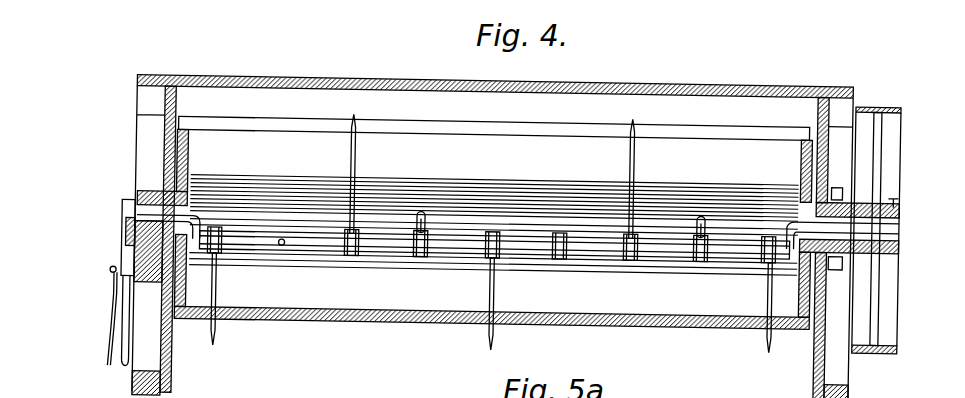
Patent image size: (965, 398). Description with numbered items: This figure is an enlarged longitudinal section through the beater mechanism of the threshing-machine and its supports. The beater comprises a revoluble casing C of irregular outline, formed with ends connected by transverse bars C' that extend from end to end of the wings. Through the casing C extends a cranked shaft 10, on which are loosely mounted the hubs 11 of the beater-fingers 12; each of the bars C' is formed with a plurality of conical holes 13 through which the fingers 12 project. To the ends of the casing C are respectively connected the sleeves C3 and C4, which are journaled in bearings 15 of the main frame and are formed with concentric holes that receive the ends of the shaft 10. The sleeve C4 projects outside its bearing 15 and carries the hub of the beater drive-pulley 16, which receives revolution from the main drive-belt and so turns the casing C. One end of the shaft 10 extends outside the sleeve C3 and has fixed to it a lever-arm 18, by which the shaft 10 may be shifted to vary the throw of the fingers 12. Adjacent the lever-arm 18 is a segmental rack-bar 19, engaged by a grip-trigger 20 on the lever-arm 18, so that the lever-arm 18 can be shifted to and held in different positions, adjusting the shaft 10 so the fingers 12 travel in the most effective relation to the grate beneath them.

The cranked shaft 10 is at (331, 251).
The hubs 11 is at (218, 250).
The beater-fingers 12 is at (351, 161).
The conical holes 13 is at (427, 221).
The bearings 15 is at (150, 203).
The beater drive-pulley 16 is at (888, 100).
The lever-arm 18 is at (125, 251).
The segmental rack-bar 19 is at (131, 268).
The grip-trigger 20 is at (113, 279).
The revoluble casing C is at (492, 236).
The transverse bars C' is at (492, 238).
The sleeve C3 is at (134, 201).
The sleeve C4 is at (900, 213).